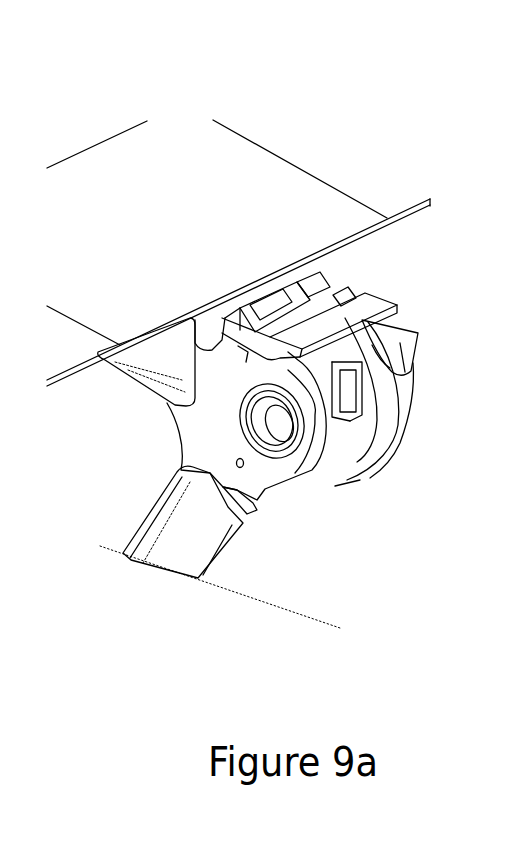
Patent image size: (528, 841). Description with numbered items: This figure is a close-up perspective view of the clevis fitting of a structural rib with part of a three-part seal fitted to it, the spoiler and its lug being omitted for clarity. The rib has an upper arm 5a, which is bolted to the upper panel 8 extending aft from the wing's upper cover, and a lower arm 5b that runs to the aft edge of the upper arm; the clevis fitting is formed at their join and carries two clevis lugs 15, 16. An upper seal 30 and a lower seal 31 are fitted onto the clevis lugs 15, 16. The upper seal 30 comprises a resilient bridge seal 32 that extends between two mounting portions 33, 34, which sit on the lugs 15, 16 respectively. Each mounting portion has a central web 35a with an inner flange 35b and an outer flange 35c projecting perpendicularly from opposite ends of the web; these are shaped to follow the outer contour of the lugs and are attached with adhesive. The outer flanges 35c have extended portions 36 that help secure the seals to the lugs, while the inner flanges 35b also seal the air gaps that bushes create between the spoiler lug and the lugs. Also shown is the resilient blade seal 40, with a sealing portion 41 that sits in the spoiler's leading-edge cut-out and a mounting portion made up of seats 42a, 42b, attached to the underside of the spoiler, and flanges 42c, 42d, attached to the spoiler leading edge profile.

The upper panel 8 is at (250, 172).
The clevis lug 15 is at (298, 281).
The clevis lug 16 is at (212, 437).
The upper seal 30 is at (309, 404).
The lower seal 31 is at (386, 475).
The bridge seal 32 is at (260, 306).
The mounting portion 33 is at (346, 291).
The mounting portion 34 is at (243, 352).
The central web 35a is at (213, 284).
The inner flange 35b is at (370, 373).
The outer flange 35c is at (262, 360).
The extended portion 36 is at (205, 338).
The blade seal 40 is at (389, 410).
The sealing portion 41 is at (363, 305).
The seat 42a is at (400, 330).
The seat 42b is at (331, 362).
The flange 42c is at (388, 353).
The flange 42d is at (341, 364).
The upper arm 5a is at (158, 371).
The lower arm 5b is at (170, 532).